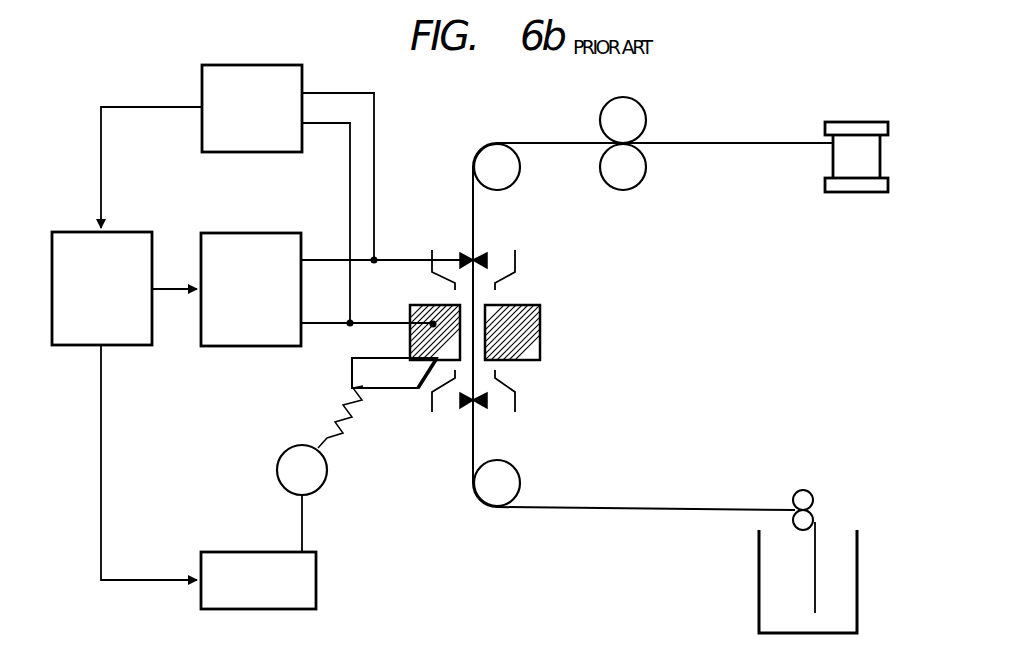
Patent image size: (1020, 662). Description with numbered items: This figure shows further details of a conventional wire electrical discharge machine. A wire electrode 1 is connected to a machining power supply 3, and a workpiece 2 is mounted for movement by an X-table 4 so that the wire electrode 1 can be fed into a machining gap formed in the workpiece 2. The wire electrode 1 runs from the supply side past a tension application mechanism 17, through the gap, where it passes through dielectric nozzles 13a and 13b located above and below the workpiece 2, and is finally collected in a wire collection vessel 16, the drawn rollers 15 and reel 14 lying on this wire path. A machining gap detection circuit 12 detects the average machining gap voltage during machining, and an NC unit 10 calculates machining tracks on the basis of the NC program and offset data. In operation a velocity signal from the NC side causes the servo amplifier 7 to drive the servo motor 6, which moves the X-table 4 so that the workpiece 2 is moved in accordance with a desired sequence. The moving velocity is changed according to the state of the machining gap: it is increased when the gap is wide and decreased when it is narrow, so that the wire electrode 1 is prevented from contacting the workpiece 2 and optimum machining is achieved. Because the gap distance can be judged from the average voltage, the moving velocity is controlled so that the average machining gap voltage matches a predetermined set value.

The wire electrode 1 is at (473, 222).
The workpiece 2 is at (540, 322).
The machining power supply 3 is at (276, 233).
The X-table 4 is at (380, 374).
The servo motor 6 is at (322, 487).
The servo amplifier 7 is at (316, 568).
The NC unit 10 is at (130, 232).
The machining gap detection circuit 12 is at (277, 65).
The dielectric nozzle 13a is at (515, 260).
The dielectric nozzle 13b is at (515, 400).
The wire supply reel 14 is at (860, 195).
The take-up rollers 15 is at (815, 510).
The wire collection vessel 16 is at (857, 590).
The tension application mechanism 17 is at (623, 190).